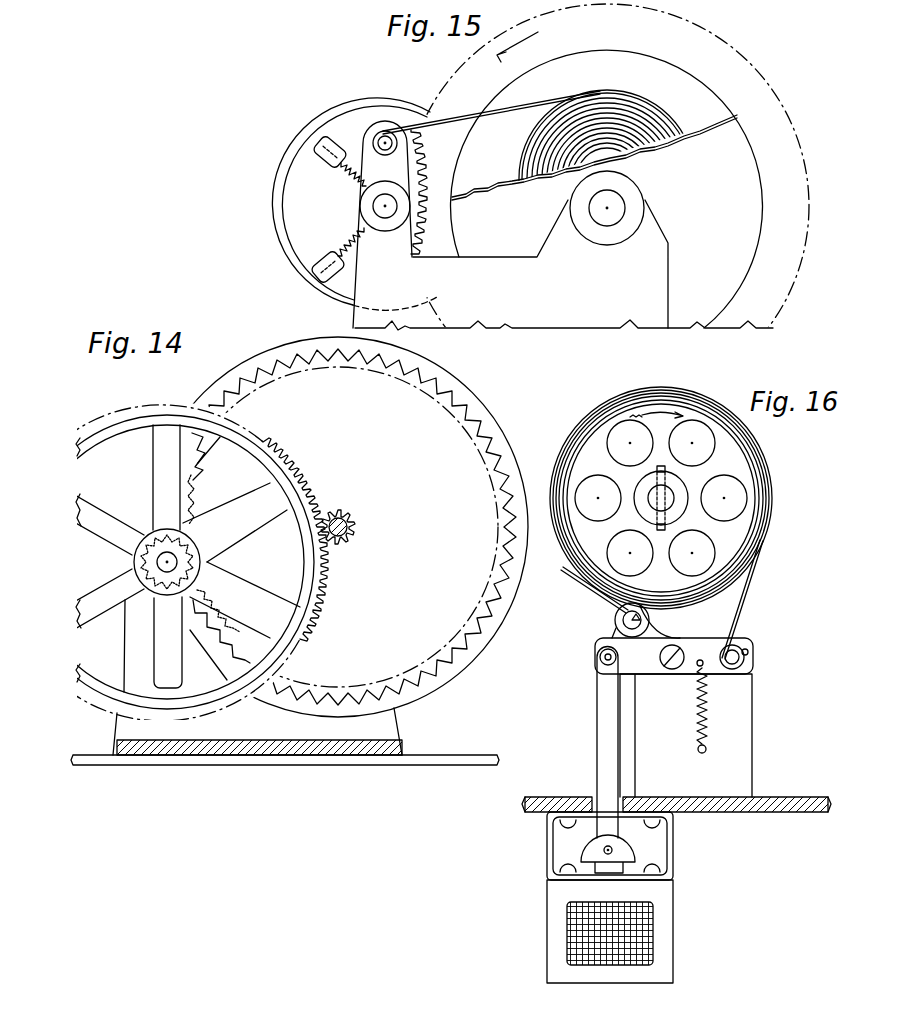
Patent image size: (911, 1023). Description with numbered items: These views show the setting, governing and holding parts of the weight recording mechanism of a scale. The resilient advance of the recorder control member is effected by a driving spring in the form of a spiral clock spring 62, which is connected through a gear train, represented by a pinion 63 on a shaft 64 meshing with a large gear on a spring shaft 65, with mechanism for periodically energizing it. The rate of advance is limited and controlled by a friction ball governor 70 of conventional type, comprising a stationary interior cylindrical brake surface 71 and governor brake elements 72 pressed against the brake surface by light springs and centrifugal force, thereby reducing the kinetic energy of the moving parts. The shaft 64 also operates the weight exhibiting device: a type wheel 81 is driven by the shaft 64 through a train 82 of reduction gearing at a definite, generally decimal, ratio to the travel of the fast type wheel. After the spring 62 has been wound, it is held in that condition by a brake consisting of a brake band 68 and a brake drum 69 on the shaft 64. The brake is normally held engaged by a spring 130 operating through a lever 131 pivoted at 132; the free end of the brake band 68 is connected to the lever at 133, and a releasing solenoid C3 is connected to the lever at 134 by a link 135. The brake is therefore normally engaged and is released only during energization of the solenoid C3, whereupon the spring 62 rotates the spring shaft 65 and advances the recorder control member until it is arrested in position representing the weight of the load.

In FIG. 15, the spiral clock spring 62 is at (653, 112).
In FIG. 15, the pinion 63 is at (414, 190).
In FIG. 15, the shaft 64 is at (385, 218).
In FIG. 15, the spring shaft 65 is at (617, 200).
In FIG. 15, the friction ball governor 70 is at (304, 129).
In FIG. 15, the stationary interior cylindrical brake surface 71 is at (288, 211).
In FIG. 15, the governor brake elements 72 is at (333, 137).
In FIG. 14, the type wheel 81 is at (503, 437).
In FIG. 14, the train of reduction gearing 82 is at (287, 467).
In FIG. 16, the brake band 68 is at (757, 568).
In FIG. 16, the brake drum 69 is at (752, 482).
In FIG. 16, the spring 130 is at (695, 718).
In FIG. 16, the lever 131 is at (713, 670).
In FIG. 16, the pivot 132 is at (662, 664).
In FIG. 16, the connection point 133 is at (745, 654).
In FIG. 16, the connection point 134 is at (600, 657).
In FIG. 16, the link 135 is at (598, 748).
In FIG. 16, the releasing solenoid C3 is at (572, 943).